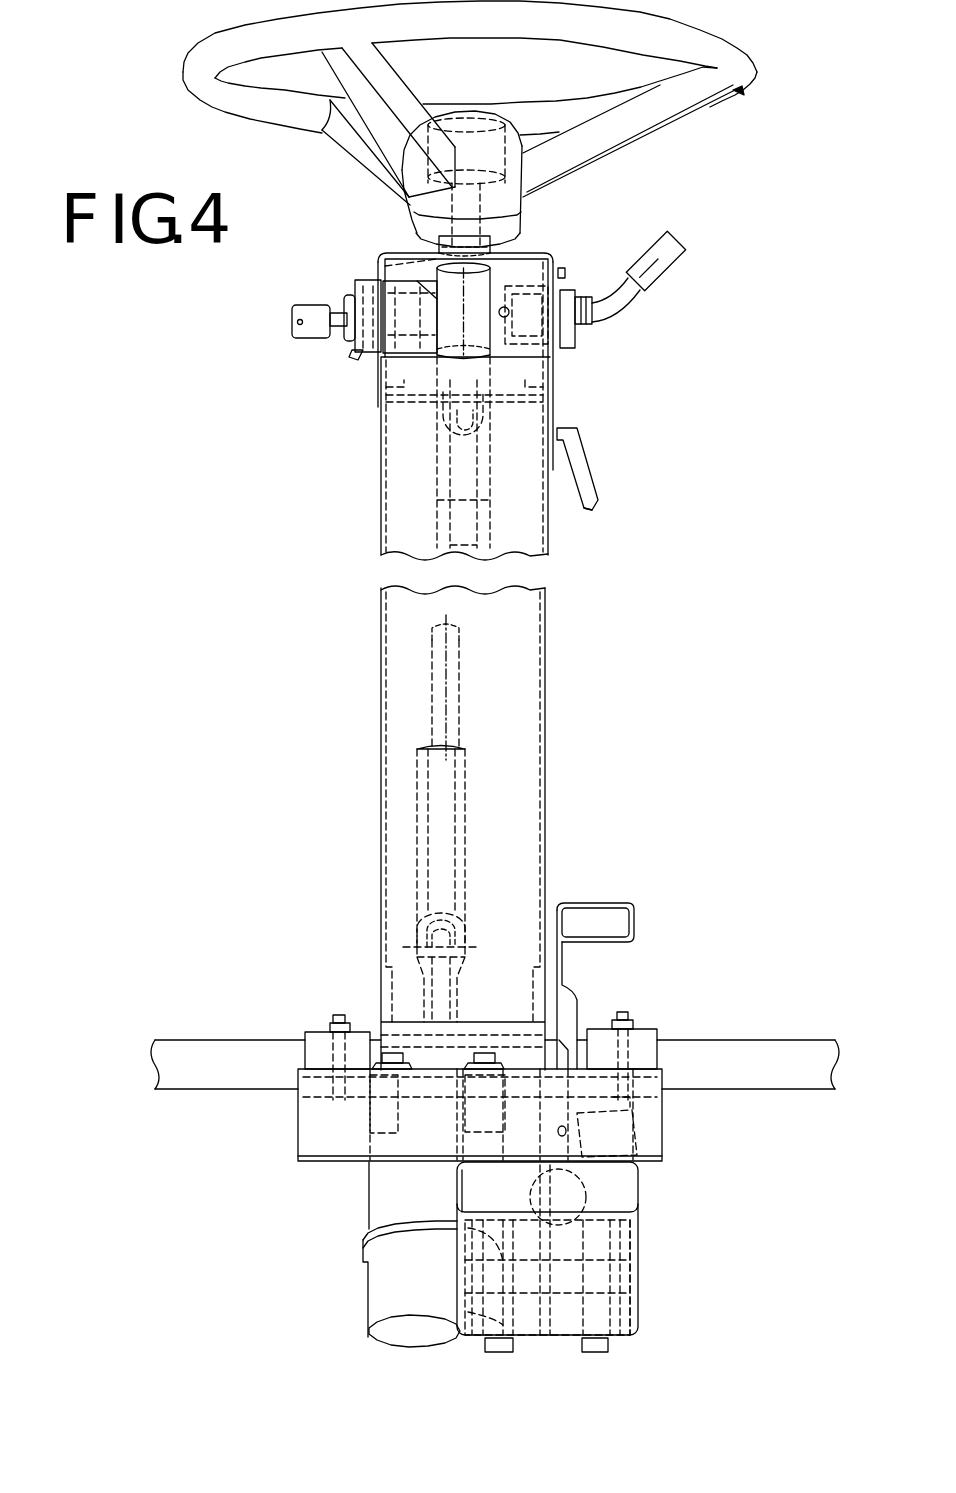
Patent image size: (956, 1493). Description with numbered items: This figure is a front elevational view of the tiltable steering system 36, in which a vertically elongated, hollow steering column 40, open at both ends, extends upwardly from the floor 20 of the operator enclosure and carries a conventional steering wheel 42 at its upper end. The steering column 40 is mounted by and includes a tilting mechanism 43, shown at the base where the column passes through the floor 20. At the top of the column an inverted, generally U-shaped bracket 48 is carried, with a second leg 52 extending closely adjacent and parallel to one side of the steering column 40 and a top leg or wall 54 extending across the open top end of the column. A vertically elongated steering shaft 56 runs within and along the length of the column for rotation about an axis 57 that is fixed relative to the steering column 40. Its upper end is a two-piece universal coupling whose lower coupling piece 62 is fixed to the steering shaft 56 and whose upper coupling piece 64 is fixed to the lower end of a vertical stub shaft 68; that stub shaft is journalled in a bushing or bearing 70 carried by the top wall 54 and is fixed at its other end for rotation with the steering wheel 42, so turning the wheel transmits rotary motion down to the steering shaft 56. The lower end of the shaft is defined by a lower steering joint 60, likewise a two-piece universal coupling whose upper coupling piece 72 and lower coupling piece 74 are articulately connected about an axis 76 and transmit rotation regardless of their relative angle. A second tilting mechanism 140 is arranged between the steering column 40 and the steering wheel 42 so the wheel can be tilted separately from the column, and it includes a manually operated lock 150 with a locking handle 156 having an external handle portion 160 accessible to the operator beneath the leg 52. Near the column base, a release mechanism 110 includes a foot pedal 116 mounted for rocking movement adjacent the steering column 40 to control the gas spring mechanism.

The steering wheel 42 is at (690, 30).
The top leg or wall 54 is at (400, 250).
The bushing or bearing 70 is at (447, 260).
The bracket 48 is at (565, 259).
The stub shaft 68 is at (377, 266).
The second tilting mechanism 140 is at (348, 376).
The second leg 52 is at (558, 368).
The upper coupling piece 64 is at (450, 412).
The external handle portion 160 is at (594, 458).
The manually operated lock 150 is at (631, 473).
The lower coupling piece 62 is at (443, 487).
The locking handle 156 is at (598, 513).
The axis 57 is at (452, 637).
The steering shaft 56 is at (433, 692).
The tiltable steering system 36 is at (415, 828).
The steering column 40 is at (570, 728).
The upper coupling piece 72 is at (420, 831).
The axis 76 is at (466, 946).
The lower steering joint 60 is at (390, 943).
The lower coupling piece 74 is at (467, 979).
The release mechanism 110 is at (637, 971).
The foot pedal 116 is at (624, 922).
The tilting mechanism 43 is at (592, 996).
The floor 20 is at (700, 1063).